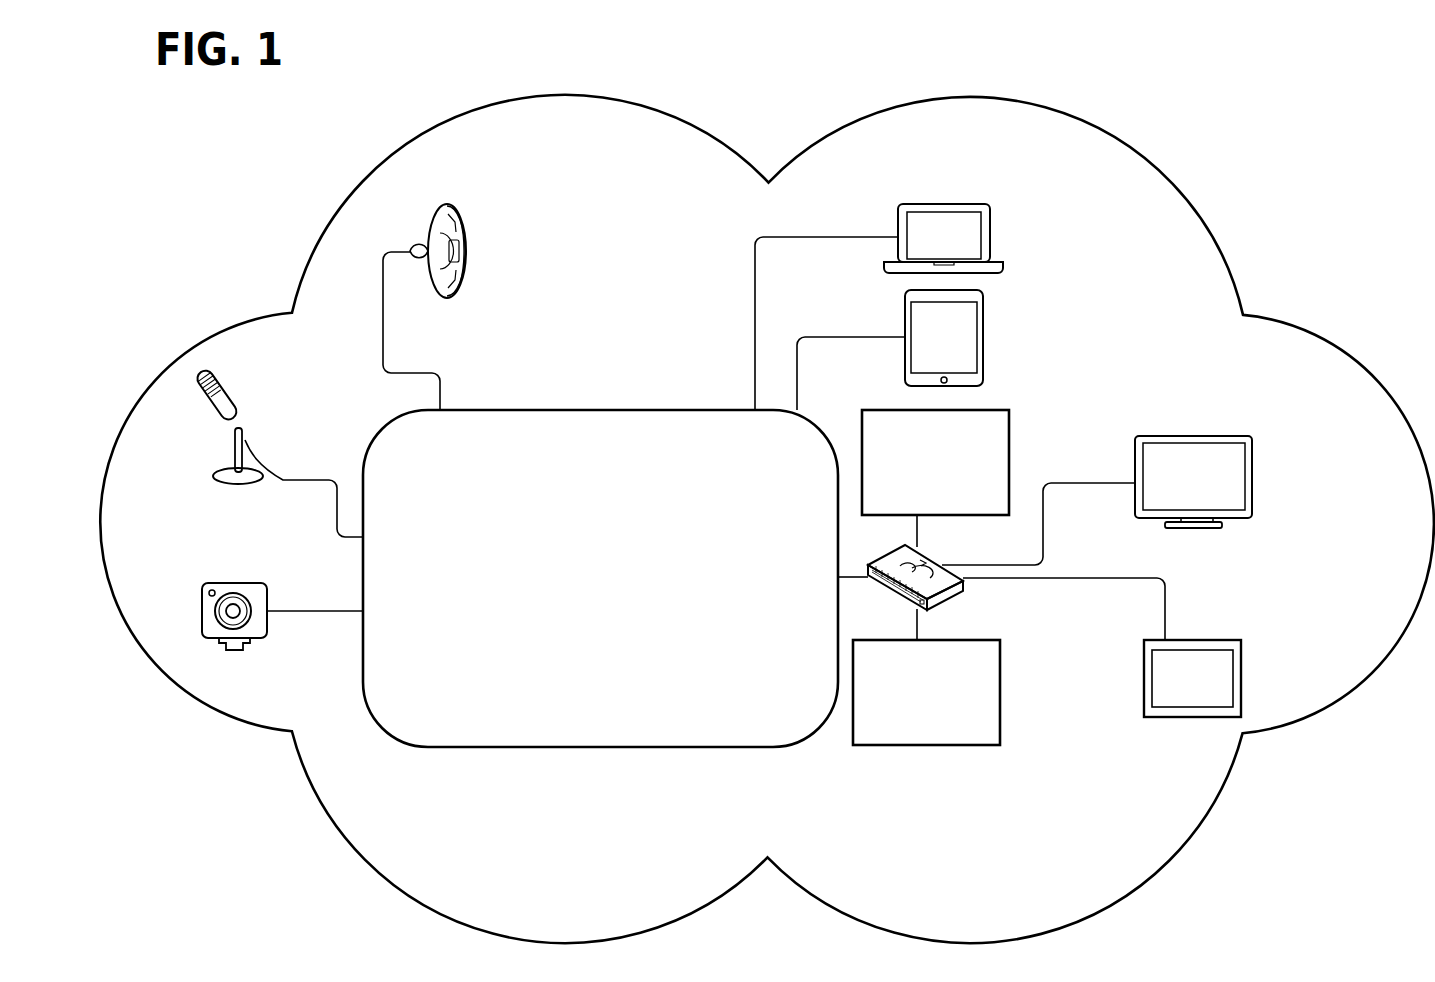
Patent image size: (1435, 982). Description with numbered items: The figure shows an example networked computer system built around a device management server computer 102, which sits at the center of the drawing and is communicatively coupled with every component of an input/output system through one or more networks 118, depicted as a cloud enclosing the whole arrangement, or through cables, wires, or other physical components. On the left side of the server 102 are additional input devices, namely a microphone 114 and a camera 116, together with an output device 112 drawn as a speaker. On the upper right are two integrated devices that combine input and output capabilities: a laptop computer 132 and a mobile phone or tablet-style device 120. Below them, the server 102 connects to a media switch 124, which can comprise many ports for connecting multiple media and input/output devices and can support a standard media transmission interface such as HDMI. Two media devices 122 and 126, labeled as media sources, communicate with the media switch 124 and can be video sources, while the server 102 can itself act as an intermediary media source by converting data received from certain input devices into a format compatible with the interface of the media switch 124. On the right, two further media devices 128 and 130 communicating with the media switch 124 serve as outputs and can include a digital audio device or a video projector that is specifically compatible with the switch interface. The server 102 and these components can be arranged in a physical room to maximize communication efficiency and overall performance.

The device management server computer 102 is at (616, 616).
The output device 112 is at (512, 264).
The microphone 114 is at (304, 434).
The camera 116 is at (279, 688).
The network 118 is at (677, 174).
The integrated device 120 is at (1027, 352).
The media device 122 is at (999, 488).
The media switch 124 is at (965, 551).
The media device 126 is at (991, 718).
The media device 128 is at (1296, 487).
The media device 130 is at (1289, 688).
The integrated device 132 is at (1034, 241).